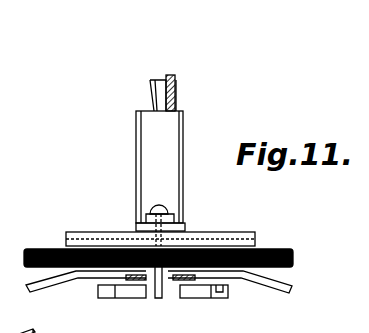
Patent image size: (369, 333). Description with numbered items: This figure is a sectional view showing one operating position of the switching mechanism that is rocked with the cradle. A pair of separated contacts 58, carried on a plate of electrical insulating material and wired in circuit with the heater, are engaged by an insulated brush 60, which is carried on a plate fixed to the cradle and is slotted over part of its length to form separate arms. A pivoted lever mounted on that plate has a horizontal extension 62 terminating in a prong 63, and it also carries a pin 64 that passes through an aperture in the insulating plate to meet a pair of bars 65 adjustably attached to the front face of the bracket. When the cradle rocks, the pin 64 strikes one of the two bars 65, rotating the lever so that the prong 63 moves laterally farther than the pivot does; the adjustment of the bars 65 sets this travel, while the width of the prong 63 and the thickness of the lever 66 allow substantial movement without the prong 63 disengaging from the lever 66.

The contacts 58 is at (56, 272).
The brush 60 is at (122, 252).
The horizontal extension 62 is at (130, 136).
The prong 63 is at (143, 86).
The pin 64 is at (155, 290).
The bars 65 is at (122, 286).
The lever 66 is at (168, 88).